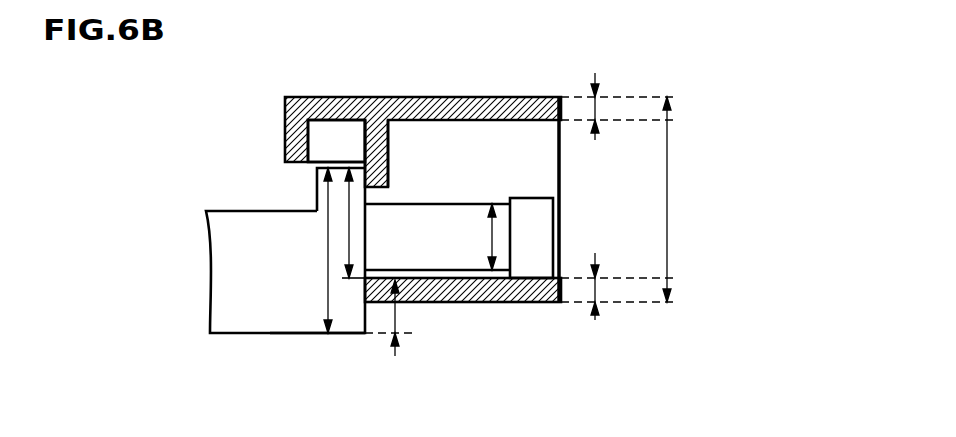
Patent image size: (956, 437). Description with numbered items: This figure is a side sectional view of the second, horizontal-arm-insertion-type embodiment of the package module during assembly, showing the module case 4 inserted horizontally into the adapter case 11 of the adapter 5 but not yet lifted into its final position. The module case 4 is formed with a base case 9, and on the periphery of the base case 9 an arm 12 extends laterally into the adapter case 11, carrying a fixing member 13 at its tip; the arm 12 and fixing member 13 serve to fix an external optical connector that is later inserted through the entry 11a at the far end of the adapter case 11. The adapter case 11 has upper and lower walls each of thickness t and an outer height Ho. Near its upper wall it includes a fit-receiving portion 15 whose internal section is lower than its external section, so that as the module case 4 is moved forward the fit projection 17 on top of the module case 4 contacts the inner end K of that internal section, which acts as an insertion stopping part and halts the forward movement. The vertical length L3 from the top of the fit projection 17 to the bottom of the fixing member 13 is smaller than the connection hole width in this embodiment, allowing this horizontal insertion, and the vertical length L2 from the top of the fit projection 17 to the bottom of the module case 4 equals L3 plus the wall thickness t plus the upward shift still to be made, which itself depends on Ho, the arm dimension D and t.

The module case 4 is at (258, 327).
The adapter 5 is at (423, 100).
The base case 9 is at (316, 327).
The adapter case 11 is at (496, 97).
The entry 11a is at (560, 198).
The arm 12 is at (434, 222).
The fixing member 13 is at (527, 213).
The fit-receiving portion 15 is at (336, 133).
The fit projection 17 is at (317, 197).
The inner end K is at (388, 152).
The vertical length L2 is at (326, 237).
The vertical length L3 is at (350, 240).
The dimension D is at (483, 237).
The thickness t is at (595, 105).
The outer height Ho is at (667, 197).